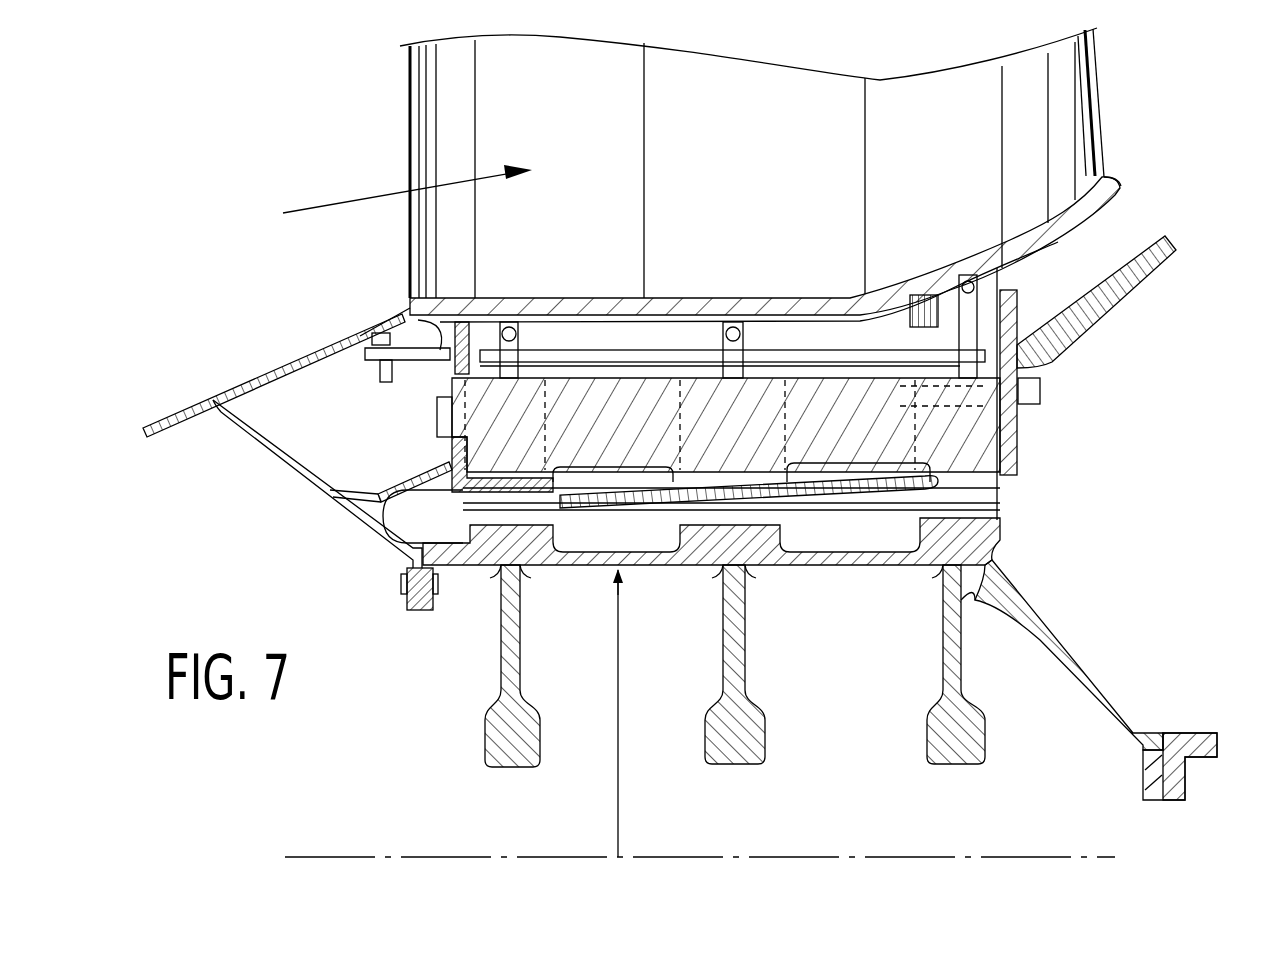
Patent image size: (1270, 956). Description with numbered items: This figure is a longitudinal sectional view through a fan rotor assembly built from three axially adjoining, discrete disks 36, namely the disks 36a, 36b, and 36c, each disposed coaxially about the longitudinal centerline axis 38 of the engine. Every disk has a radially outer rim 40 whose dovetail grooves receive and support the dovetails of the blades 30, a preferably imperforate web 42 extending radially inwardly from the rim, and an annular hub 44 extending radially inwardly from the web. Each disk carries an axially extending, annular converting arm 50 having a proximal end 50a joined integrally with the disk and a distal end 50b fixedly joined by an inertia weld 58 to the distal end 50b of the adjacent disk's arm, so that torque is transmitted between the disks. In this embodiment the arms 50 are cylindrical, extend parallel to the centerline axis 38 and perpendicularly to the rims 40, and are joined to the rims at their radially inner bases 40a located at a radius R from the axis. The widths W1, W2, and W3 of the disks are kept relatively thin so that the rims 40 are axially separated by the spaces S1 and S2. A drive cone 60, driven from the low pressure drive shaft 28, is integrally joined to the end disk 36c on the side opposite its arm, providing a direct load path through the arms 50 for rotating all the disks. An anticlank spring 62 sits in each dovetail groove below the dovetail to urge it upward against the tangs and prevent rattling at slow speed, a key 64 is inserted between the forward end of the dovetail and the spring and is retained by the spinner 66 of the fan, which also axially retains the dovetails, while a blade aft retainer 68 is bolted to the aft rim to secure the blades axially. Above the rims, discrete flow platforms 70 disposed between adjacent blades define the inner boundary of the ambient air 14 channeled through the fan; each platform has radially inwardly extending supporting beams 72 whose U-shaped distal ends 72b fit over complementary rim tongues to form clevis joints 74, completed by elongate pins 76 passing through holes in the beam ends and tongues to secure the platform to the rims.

The ambient air 14 is at (348, 198).
The drive shaft 28 is at (1176, 733).
The blades 30 is at (407, 99).
The disks 36 is at (727, 675).
The first disk 36a is at (528, 767).
The second disk 36b is at (757, 765).
The end disk 36c is at (980, 765).
The longitudinal centerline axis 38 is at (845, 856).
The rim 40 is at (478, 528).
The radially inner base 40a is at (545, 570).
The web 42 is at (496, 645).
The hub 44 is at (485, 737).
The converting arm 50 is at (805, 574).
The proximal end 50a is at (566, 568).
The distal end 50b is at (598, 570).
The inertia welds 58 is at (621, 572).
The drive cone 60 is at (1063, 658).
The anticlank spring 62 is at (396, 522).
The key 64 is at (430, 474).
The spinner 66 is at (197, 402).
The blade aft retainer 68 is at (1052, 368).
The flow platform 70 is at (678, 298).
The supporting beam 72 is at (762, 326).
The beam distal end 72b is at (922, 336).
The clevis joint 74 is at (983, 304).
The pins 76 is at (592, 346).
The axial space S1 is at (672, 522).
The axial space S2 is at (912, 522).
The disk width W1 is at (557, 515).
The disk width W2 is at (683, 522).
The disk width W3 is at (998, 522).
The radius R is at (619, 708).